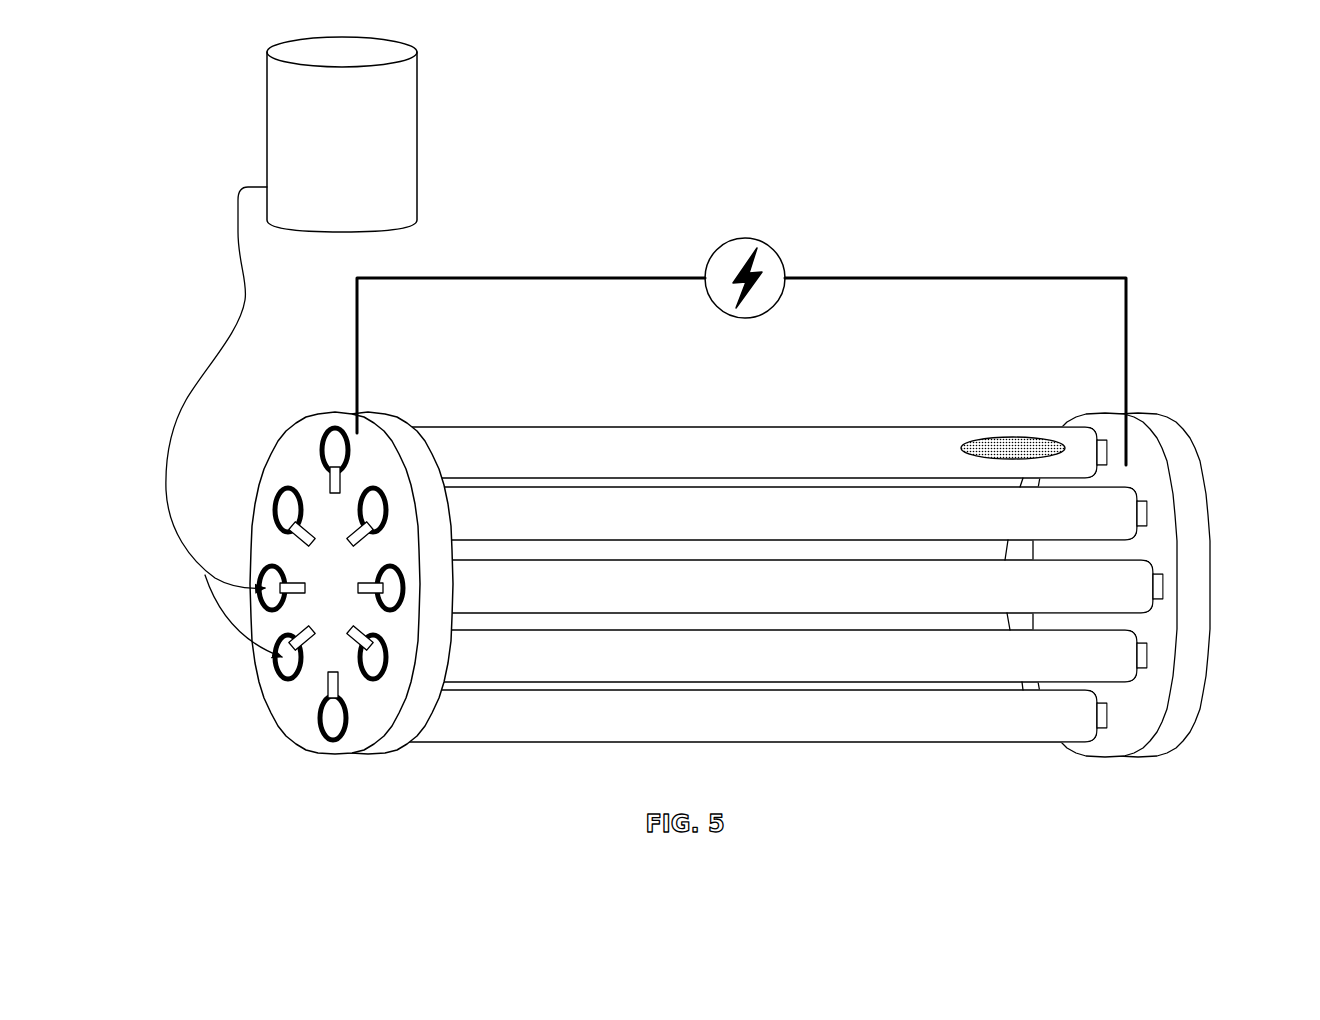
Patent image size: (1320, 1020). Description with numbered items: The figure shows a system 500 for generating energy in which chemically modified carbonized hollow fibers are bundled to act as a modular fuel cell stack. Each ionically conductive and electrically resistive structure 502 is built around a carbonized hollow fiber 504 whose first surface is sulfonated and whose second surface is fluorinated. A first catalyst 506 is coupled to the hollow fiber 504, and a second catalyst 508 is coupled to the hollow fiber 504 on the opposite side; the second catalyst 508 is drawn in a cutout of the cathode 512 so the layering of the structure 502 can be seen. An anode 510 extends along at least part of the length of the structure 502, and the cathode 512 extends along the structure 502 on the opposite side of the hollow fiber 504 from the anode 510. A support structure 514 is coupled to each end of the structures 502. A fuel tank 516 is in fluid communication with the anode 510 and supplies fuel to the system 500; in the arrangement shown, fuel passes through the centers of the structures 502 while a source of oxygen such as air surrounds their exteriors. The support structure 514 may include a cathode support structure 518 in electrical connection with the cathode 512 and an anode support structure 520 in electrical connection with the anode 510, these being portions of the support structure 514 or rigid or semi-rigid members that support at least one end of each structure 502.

The system 500 is at (1084, 212).
The ionically conductive and electrically resistive structure 502 is at (697, 438).
The carbonized hollow fiber 504 is at (337, 446).
The first catalyst 506 is at (326, 462).
The second catalyst 508 is at (1016, 446).
The anode 510 is at (335, 449).
The cathode 512 is at (473, 455).
The support structure 514 is at (364, 452).
The fuel tank 516 is at (291, 347).
The cathode support structure 518 is at (1142, 668).
The anode support structure 520 is at (330, 678).